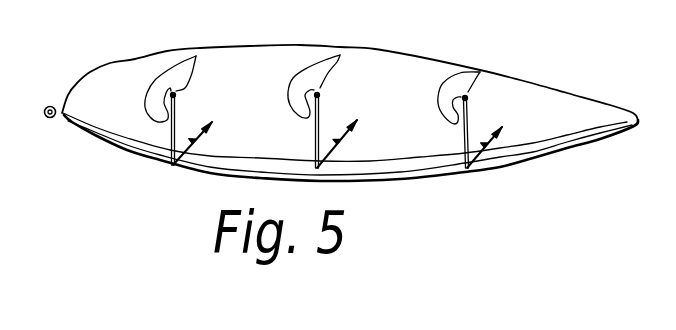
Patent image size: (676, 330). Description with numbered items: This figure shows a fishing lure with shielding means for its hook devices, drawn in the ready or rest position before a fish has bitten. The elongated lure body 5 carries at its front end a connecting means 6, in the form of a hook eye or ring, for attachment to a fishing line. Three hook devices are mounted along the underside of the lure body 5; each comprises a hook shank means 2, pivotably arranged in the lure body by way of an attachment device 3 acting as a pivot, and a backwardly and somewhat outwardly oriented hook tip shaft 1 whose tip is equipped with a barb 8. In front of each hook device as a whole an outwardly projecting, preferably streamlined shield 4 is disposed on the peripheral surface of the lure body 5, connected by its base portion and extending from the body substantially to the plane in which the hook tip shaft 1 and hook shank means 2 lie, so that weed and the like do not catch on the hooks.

The hook tip shaft 1 is at (192, 153).
The hook shank means 2 is at (187, 127).
The attachment device 3 is at (196, 56).
The shield 4 is at (158, 80).
The lure body 5 is at (575, 127).
The connecting means 6 is at (48, 104).
The barb 8 is at (500, 140).